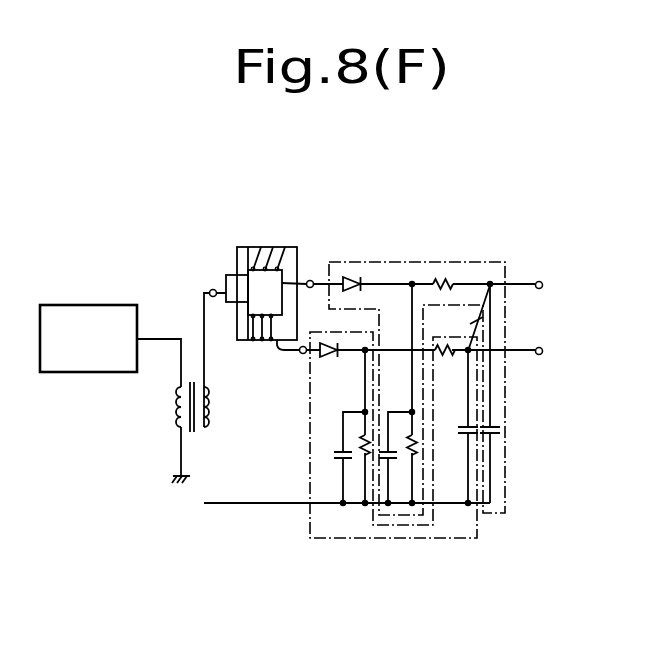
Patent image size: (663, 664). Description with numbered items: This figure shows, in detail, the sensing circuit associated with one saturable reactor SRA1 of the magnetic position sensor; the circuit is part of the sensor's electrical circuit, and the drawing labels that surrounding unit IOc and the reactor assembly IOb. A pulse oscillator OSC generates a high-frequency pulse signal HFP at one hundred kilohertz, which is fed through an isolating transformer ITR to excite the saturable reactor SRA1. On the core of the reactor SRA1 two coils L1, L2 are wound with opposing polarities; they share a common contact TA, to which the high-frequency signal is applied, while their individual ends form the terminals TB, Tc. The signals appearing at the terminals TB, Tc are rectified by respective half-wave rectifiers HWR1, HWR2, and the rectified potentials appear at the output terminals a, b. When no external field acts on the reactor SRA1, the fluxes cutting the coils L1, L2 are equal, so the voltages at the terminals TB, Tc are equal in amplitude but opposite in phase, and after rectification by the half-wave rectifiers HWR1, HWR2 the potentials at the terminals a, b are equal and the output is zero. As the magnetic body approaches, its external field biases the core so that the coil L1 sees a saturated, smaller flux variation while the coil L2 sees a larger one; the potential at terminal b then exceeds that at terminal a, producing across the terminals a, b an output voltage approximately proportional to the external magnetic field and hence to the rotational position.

The pulse oscillator OSC is at (82, 364).
The high-frequency pulse signal HFP is at (159, 350).
The isolating transformer ITR is at (178, 430).
The common contact TA is at (209, 345).
The terminal TB is at (301, 272).
The terminal Tc is at (292, 358).
The saturable reactor SRA1 is at (242, 247).
The coil L1 is at (272, 246).
The coil L2 is at (260, 342).
The input/output unit b IOb is at (290, 246).
The input/output unit c IOc is at (212, 534).
The half-wave rectifier HWR1 is at (357, 528).
The half-wave rectifier HWR2 is at (410, 266).
The output terminal a is at (549, 284).
The output terminal b is at (550, 352).